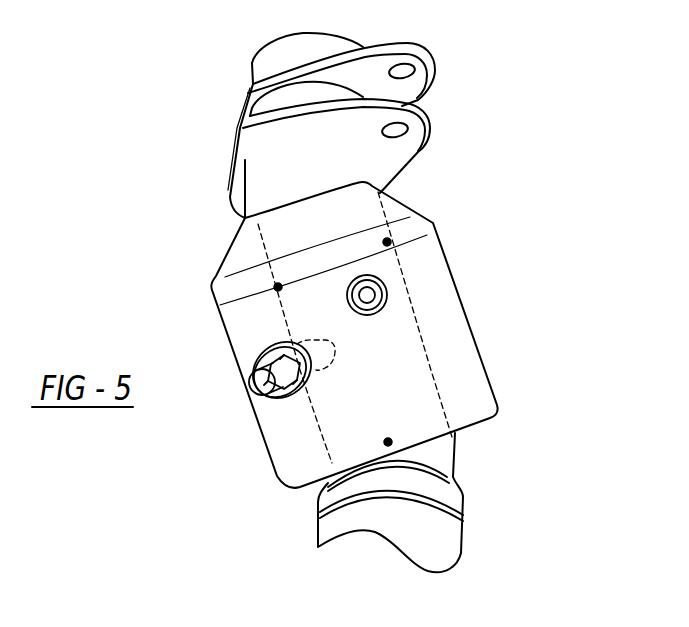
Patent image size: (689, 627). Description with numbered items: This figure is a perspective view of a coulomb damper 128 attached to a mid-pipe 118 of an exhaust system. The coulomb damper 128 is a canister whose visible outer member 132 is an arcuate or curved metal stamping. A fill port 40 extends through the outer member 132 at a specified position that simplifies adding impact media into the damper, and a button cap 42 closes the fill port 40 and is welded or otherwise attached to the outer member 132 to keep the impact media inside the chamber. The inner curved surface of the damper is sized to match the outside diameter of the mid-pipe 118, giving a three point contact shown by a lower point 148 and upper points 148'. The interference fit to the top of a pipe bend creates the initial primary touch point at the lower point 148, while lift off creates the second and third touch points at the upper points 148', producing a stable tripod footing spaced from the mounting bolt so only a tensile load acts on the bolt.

The mid-pipe 118 is at (277, 175).
The coulomb damper 128 is at (536, 343).
The outer member 132 is at (291, 425).
The fill port 40 is at (386, 294).
The button cap 42 is at (383, 287).
The upper points 148' is at (318, 221).
The lower point 148 is at (289, 487).